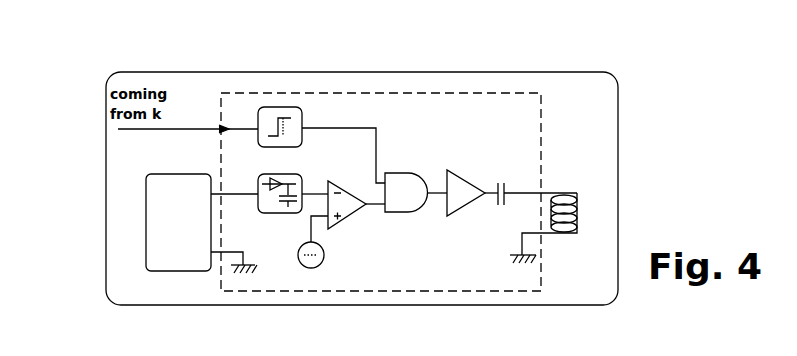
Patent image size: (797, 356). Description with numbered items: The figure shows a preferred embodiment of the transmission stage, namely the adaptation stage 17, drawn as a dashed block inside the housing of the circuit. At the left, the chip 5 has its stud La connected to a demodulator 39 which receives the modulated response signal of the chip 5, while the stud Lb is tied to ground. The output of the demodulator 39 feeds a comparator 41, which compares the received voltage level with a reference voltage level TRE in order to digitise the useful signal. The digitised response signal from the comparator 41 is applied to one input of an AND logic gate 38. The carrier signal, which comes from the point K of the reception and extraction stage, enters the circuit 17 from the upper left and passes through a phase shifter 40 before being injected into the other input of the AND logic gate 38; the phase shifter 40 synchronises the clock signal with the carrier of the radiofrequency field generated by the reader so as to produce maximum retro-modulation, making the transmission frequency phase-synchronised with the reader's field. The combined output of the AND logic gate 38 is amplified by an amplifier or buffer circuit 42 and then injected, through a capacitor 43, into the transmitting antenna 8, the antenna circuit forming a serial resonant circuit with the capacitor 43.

The chip 5 is at (160, 241).
The transmitting antenna 8 is at (577, 213).
The adaptation stage 17 is at (548, 116).
The AND logic gate 38 is at (402, 212).
The demodulator 39 is at (280, 214).
The phase shifter 40 is at (278, 108).
The comparator 41 is at (350, 212).
The amplifier or buffer circuit 42 is at (466, 205).
The capacitor 43 is at (503, 180).
The reference voltage level TRE is at (311, 268).